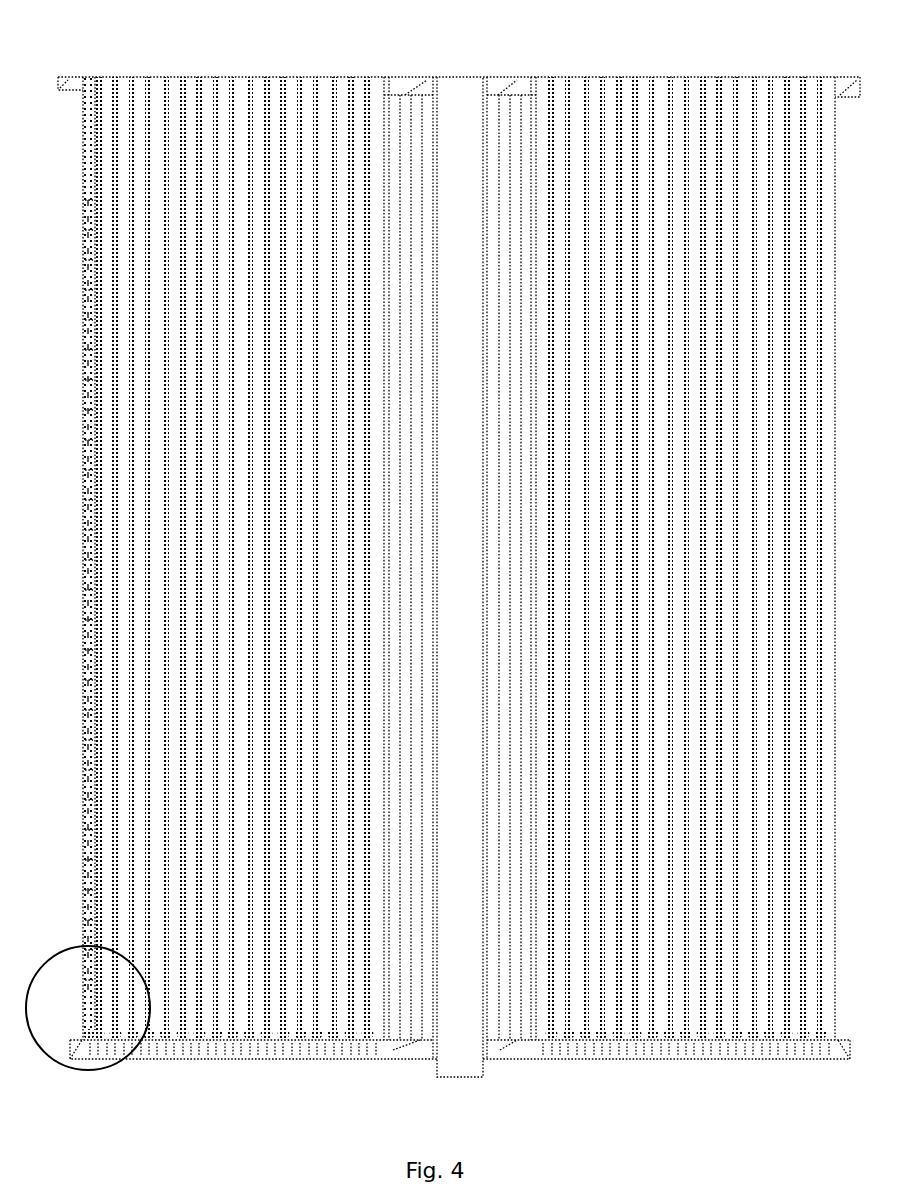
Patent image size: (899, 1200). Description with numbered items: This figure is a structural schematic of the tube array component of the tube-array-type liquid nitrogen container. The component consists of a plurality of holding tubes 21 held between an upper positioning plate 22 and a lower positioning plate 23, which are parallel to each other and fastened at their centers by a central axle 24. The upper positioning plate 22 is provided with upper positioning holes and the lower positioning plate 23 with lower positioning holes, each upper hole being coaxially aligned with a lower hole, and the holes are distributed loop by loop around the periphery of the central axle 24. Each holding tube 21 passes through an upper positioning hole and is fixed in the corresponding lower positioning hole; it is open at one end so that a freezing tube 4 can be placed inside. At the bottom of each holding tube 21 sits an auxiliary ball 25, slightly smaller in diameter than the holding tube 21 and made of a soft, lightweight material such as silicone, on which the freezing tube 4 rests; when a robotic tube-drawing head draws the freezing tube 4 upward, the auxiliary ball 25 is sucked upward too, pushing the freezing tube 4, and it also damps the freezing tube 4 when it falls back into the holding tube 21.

The freezing tube 4 is at (88, 592).
The holding tube 21 is at (177, 86).
The upper positioning plate 22 is at (400, 82).
The lower positioning plate 23 is at (420, 1042).
The central axle 24 is at (463, 90).
The auxiliary ball 25 is at (190, 1032).